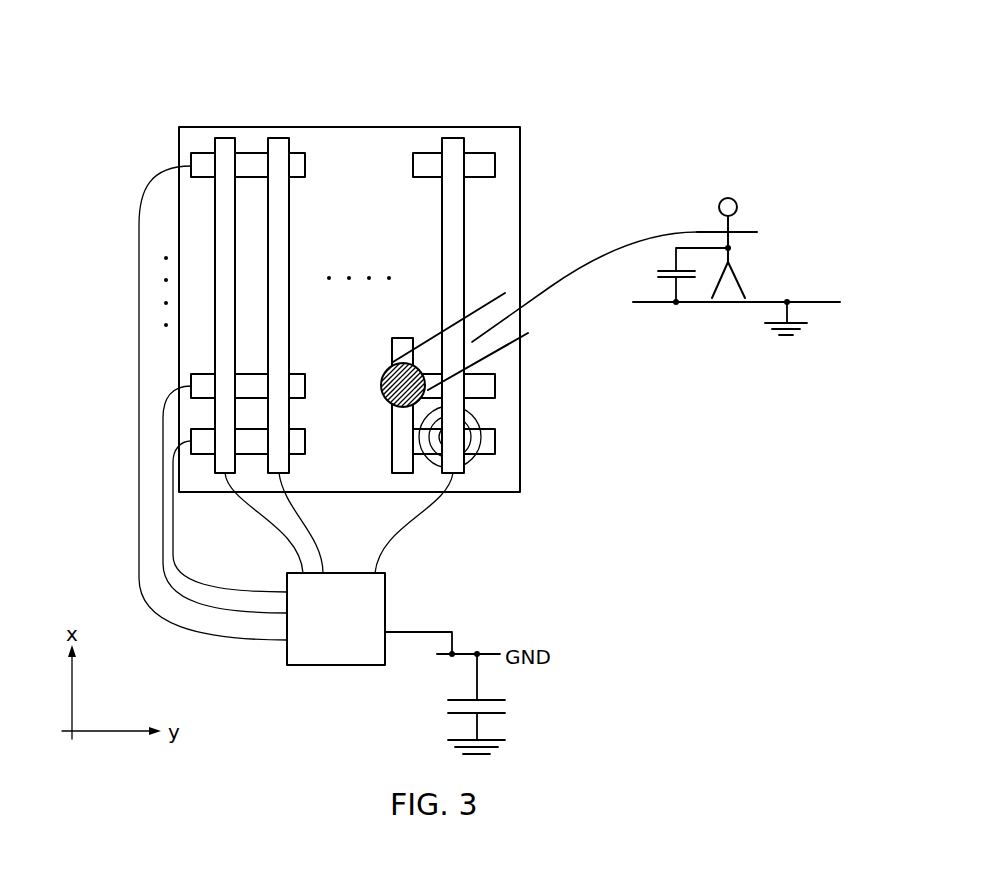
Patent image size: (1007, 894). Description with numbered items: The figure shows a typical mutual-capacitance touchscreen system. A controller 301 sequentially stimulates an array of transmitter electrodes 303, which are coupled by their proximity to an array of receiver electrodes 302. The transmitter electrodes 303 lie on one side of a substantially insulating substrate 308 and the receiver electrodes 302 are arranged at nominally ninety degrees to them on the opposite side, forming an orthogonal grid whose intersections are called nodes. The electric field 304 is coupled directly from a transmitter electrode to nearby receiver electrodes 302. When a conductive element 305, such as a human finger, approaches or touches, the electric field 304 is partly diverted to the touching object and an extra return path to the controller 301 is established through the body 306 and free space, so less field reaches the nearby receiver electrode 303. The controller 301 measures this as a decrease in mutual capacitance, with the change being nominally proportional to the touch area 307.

The controller 301 is at (327, 667).
The receiver electrodes 302 is at (453, 88).
The transmitter electrodes 303 is at (102, 160).
The electric field 304 is at (473, 463).
The conductive element 305 is at (400, 412).
The body 306 is at (738, 222).
The touch area 307 is at (385, 377).
The substantially insulating substrate 308 is at (520, 138).